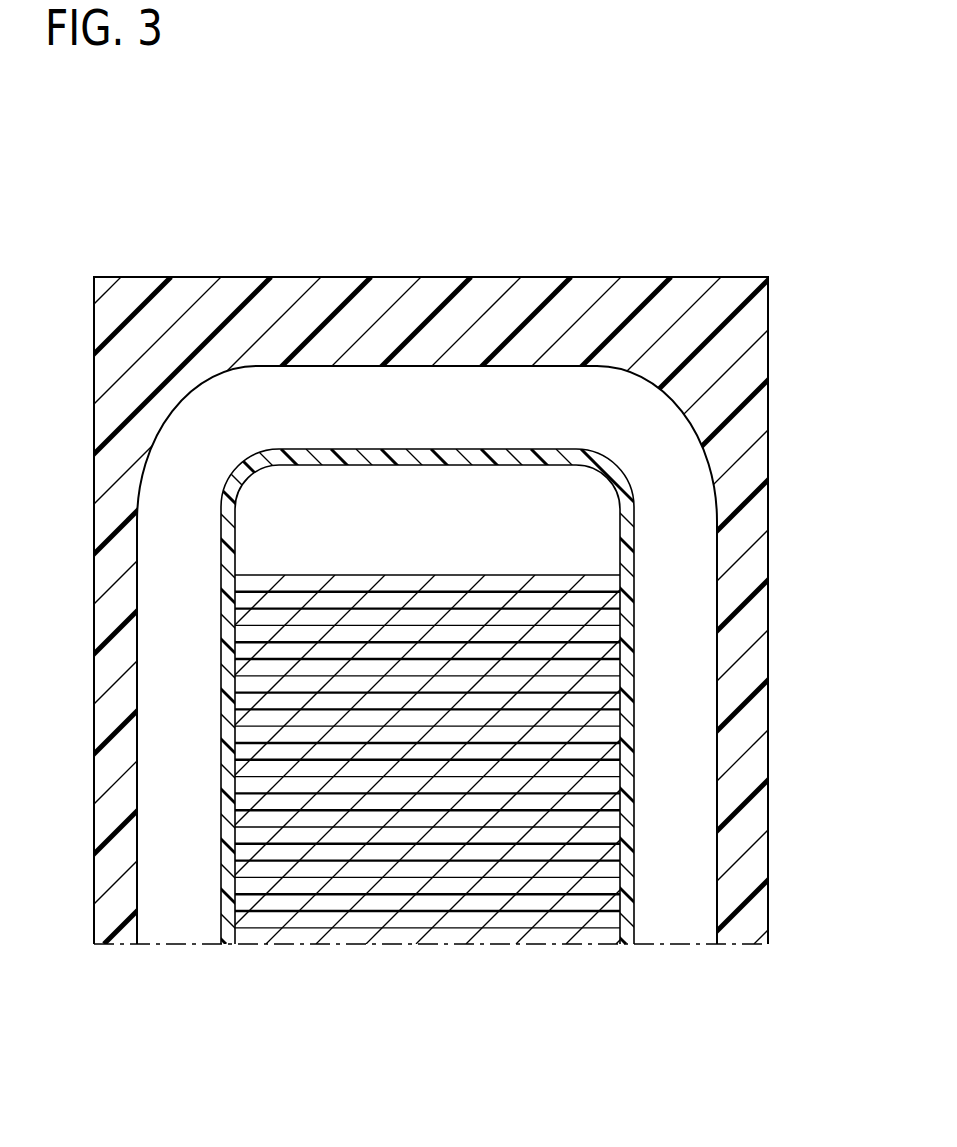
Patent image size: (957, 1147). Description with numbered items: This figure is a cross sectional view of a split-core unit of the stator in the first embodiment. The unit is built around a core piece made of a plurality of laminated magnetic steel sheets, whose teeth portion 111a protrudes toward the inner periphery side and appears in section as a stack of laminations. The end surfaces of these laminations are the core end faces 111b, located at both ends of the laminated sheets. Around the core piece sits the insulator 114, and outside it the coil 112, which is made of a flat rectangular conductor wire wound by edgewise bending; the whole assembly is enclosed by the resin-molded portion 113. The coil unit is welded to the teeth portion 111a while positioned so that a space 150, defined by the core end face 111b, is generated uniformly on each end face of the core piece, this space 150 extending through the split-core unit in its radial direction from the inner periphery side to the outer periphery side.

The teeth portion 111a is at (557, 788).
The core end face 111b is at (482, 573).
The coil 112 is at (660, 537).
The resin-molded portion 113 is at (733, 305).
The insulator 114 is at (625, 600).
The space 150 is at (396, 493).